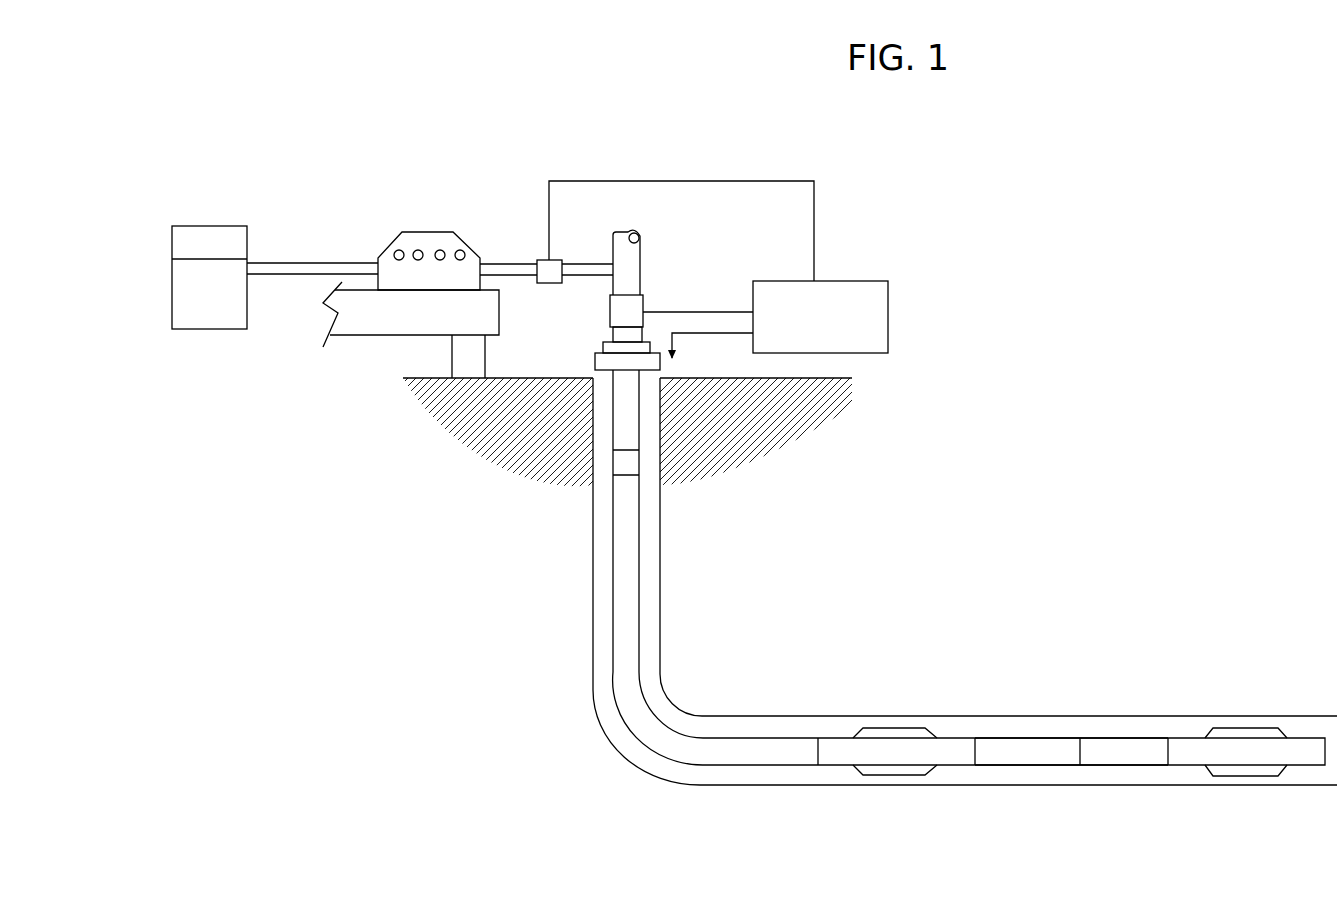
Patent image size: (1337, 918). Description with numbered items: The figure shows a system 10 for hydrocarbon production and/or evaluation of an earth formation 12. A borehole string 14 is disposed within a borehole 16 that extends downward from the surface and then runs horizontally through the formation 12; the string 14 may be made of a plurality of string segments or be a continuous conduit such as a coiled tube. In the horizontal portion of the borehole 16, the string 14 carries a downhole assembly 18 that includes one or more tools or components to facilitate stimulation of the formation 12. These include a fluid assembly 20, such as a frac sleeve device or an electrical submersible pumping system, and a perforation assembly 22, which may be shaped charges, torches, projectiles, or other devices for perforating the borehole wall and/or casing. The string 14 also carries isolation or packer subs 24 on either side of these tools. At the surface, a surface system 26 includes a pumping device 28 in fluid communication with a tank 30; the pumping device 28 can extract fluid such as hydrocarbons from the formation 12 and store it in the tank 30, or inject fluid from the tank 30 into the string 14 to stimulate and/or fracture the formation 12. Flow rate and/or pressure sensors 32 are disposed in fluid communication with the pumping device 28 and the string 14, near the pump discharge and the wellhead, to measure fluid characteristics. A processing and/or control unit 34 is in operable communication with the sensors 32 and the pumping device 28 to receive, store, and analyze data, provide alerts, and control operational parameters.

The system 10 is at (1130, 463).
The earth formation 12 is at (517, 470).
The borehole string 14 is at (622, 605).
The borehole 16 is at (600, 688).
The downhole assembly 18 is at (1155, 688).
The fluid assembly 20 is at (1013, 755).
The perforation assembly 22 is at (1107, 747).
The packer sub 24 is at (878, 740).
The surface system 26 is at (368, 182).
The pumping device 28 is at (453, 242).
The tank 30 is at (202, 310).
The flow rate and/or pressure sensor 32 is at (560, 302).
The processing and/or control unit 34 is at (765, 319).